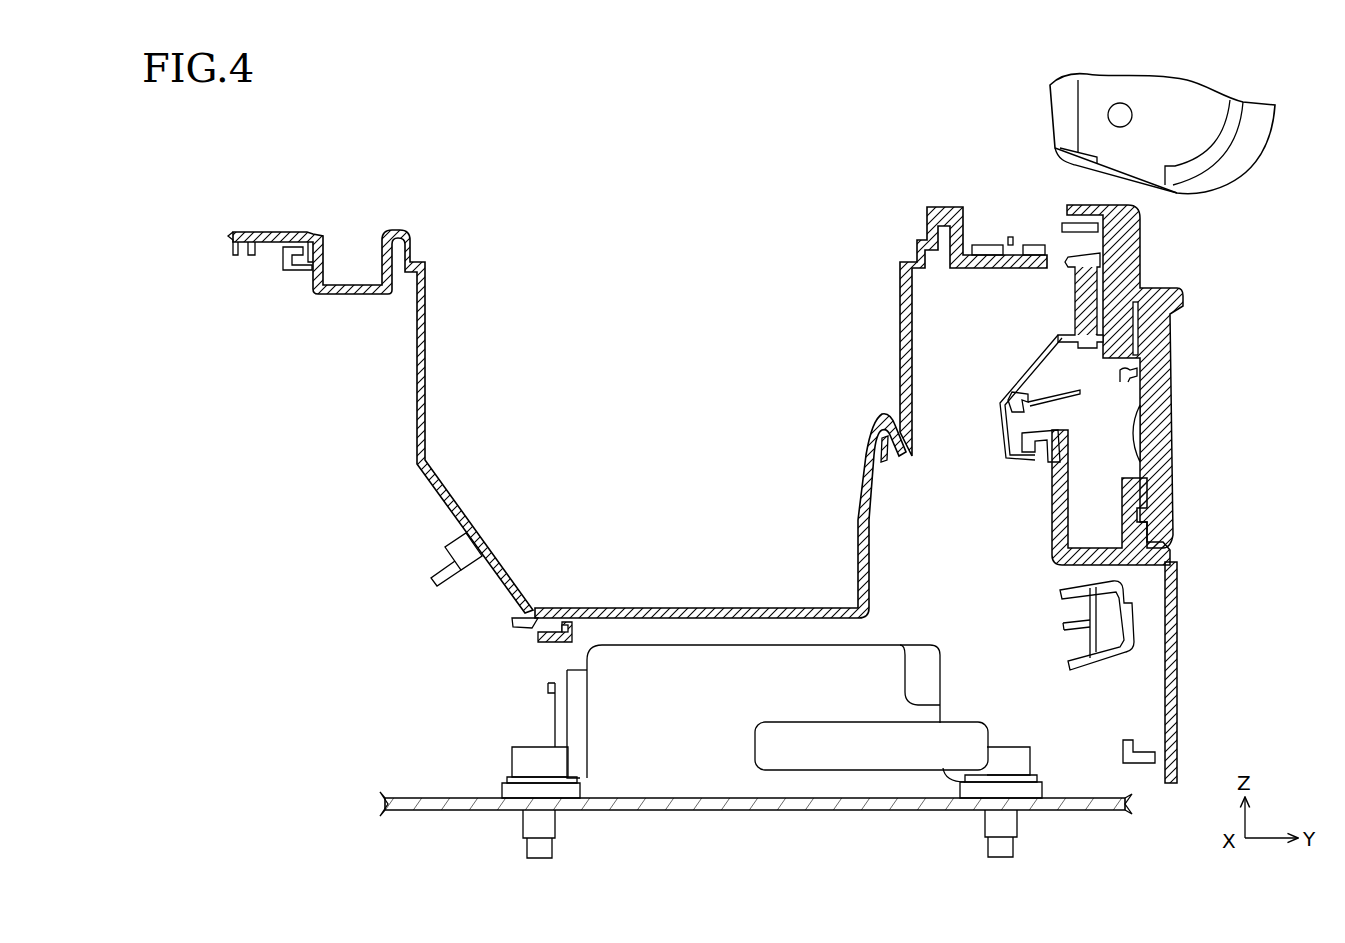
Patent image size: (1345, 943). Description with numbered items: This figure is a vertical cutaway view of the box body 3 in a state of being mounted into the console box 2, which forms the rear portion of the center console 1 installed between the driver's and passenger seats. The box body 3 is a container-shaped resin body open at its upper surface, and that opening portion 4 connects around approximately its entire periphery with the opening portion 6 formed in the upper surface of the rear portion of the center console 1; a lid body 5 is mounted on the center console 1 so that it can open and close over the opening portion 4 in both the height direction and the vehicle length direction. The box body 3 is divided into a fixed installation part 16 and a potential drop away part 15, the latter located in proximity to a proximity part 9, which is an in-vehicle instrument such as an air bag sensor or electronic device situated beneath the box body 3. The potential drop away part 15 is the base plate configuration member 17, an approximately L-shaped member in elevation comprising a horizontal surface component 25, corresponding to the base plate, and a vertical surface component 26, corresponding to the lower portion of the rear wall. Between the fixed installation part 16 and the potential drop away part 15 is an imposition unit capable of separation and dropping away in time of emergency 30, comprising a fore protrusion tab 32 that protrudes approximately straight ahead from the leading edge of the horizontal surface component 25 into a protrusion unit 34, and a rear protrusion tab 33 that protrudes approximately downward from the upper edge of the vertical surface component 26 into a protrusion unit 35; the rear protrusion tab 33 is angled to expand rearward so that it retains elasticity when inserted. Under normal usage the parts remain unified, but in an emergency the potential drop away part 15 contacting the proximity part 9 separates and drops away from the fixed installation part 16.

The center console 1 is at (274, 224).
The console box 2 is at (830, 68).
The box body 3 is at (600, 126).
The opening portion 4 is at (904, 243).
The lid body 5 is at (1030, 108).
The opening portion 6 is at (924, 212).
The proximity part 9 is at (940, 695).
The potential drop away part 15 is at (862, 458).
The fixed installation part 16 is at (895, 343).
The base plate configuration member 17 is at (1128, 140).
The horizontal surface component 25 is at (615, 607).
The vertical surface component 26 is at (860, 533).
The imposition unit capable of separation and dropping away in time of emergency 30 is at (1256, 578).
The protrusion tab 32 is at (512, 622).
The protrusion tab 33 is at (893, 460).
The protrusion unit 34 is at (534, 637).
The protrusion unit 35 is at (886, 468).